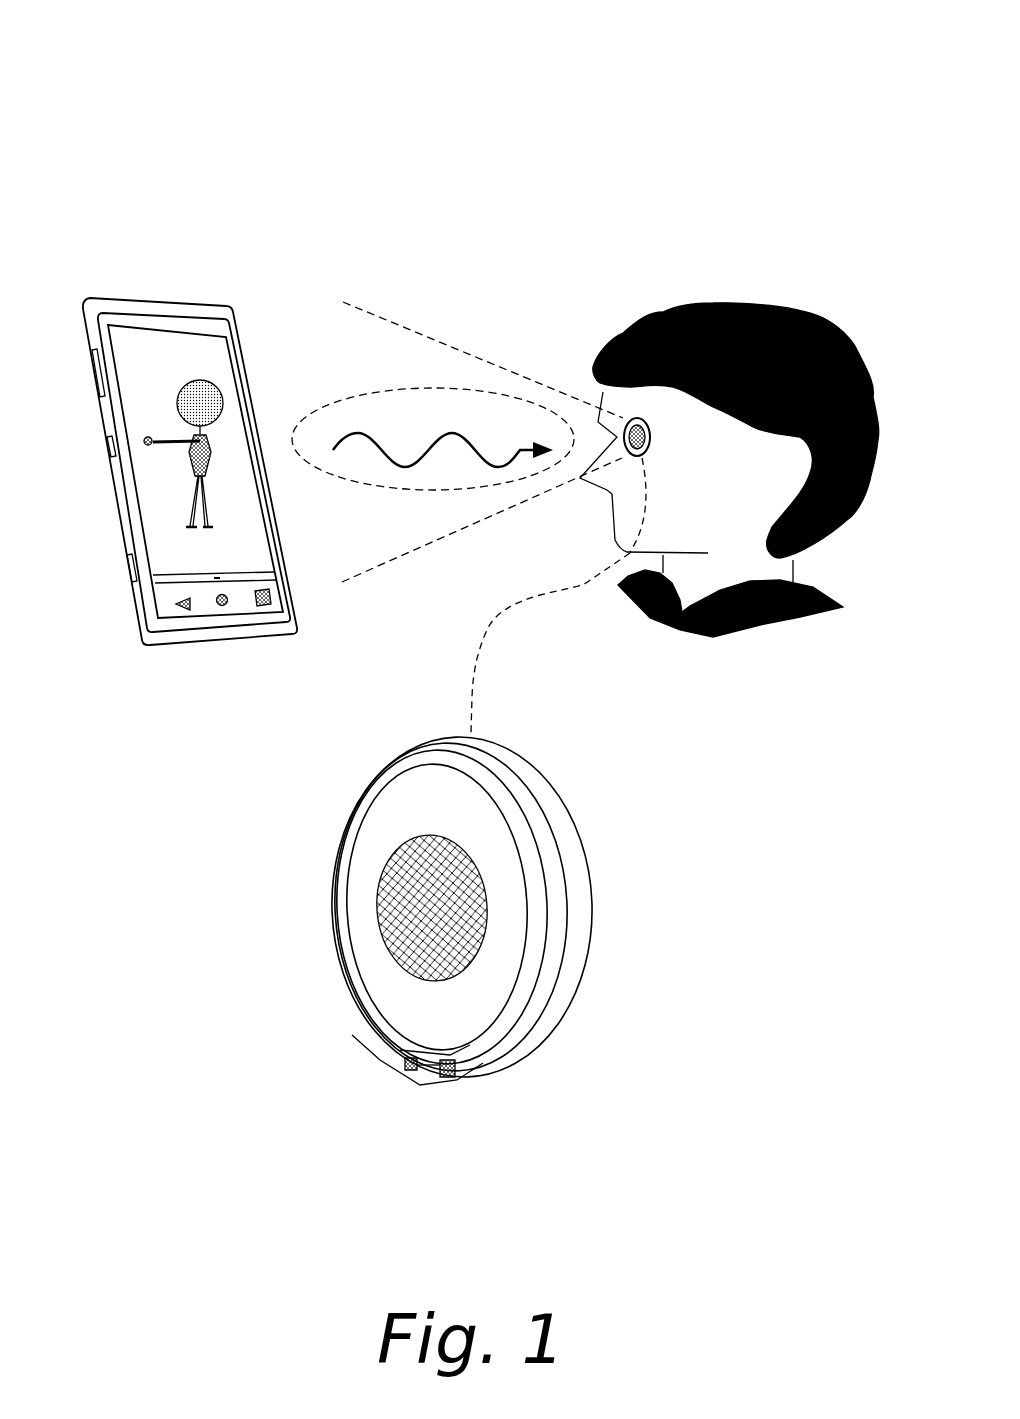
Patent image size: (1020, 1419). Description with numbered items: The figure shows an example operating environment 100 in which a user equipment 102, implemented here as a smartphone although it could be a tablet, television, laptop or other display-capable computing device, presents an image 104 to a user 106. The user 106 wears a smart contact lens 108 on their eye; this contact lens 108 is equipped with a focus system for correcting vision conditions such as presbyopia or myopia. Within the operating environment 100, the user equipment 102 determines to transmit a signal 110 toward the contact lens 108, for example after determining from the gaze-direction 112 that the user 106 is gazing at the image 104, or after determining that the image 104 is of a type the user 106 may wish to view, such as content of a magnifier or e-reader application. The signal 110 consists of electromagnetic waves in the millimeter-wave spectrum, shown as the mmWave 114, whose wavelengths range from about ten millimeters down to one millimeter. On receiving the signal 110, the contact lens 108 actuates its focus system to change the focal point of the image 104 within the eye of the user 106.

The operating environment 100 is at (752, 32).
The user equipment 102 is at (233, 309).
The image 104 is at (193, 380).
The user 106 is at (723, 303).
The contact lens 108 is at (645, 448).
The signal 110 is at (400, 489).
The gaze-direction 112 is at (380, 317).
The mmWave 114 is at (388, 452).